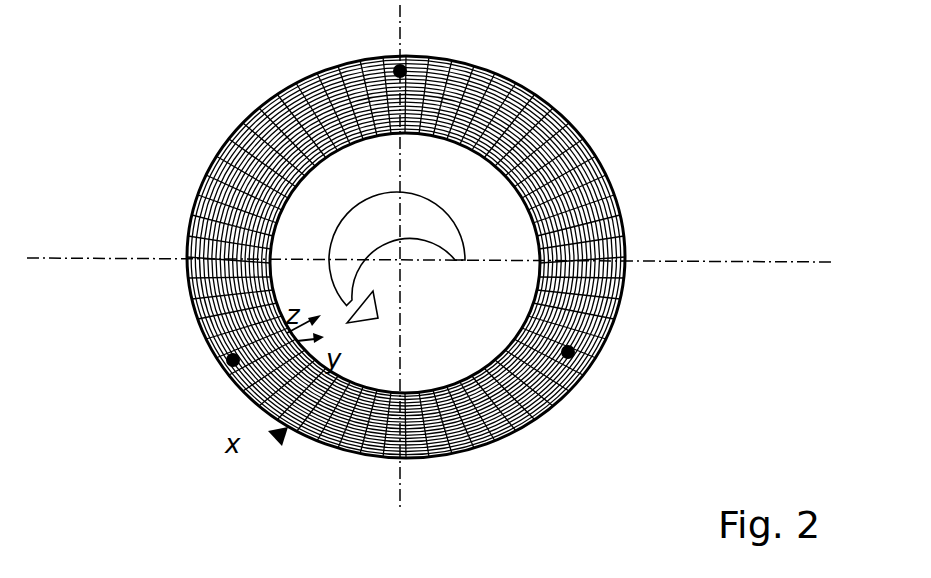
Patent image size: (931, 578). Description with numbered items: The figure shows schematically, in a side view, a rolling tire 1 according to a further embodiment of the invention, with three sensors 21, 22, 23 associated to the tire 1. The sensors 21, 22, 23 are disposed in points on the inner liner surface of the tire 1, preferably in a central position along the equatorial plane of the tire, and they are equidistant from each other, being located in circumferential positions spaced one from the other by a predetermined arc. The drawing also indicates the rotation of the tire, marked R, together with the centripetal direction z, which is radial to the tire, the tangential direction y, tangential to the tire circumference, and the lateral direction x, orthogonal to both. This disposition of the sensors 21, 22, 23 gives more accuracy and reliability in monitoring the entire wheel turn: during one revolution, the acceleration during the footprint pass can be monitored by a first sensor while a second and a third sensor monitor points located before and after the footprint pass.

The tire 1 is at (205, 164).
The sensor 21 is at (312, 73).
The sensor 22 is at (218, 375).
The sensor 23 is at (607, 350).
The rotation direction R is at (461, 250).